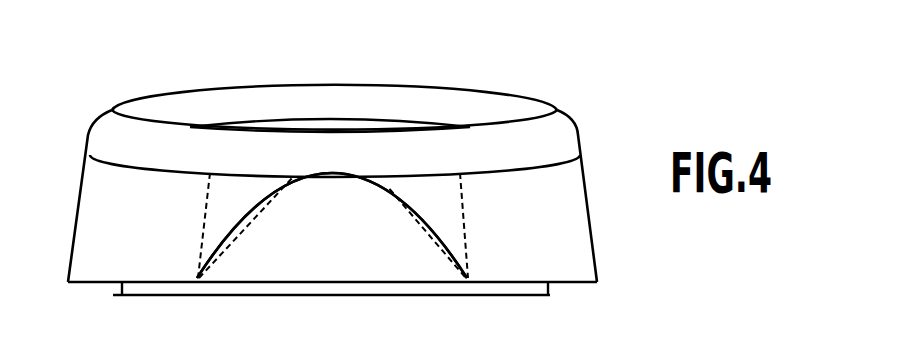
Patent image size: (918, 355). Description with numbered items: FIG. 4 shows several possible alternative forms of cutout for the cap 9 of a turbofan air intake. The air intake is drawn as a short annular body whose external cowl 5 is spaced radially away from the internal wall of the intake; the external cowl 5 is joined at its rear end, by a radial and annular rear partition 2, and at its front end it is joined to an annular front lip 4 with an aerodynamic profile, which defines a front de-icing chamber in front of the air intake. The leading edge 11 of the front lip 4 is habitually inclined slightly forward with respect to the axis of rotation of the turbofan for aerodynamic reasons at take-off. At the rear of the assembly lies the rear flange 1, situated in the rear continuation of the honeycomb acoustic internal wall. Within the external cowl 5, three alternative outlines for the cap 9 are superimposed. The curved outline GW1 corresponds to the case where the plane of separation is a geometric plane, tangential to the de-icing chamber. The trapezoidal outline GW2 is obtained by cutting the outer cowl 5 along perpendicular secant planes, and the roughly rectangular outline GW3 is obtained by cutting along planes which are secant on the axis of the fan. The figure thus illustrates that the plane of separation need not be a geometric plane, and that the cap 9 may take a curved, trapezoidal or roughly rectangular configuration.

The rear flange 1 is at (355, 296).
The rear partition 2 is at (575, 286).
The front lip 4 is at (332, 147).
The external cowl 5 is at (98, 205).
The cap 9 is at (287, 236).
The leading edge of the front lip 11 is at (458, 88).
The curved outline of the cap GW1 is at (427, 203).
The trapezoidal outline of the cap GW2 is at (430, 232).
The roughly rectangular outline of the cap GW3 is at (467, 257).